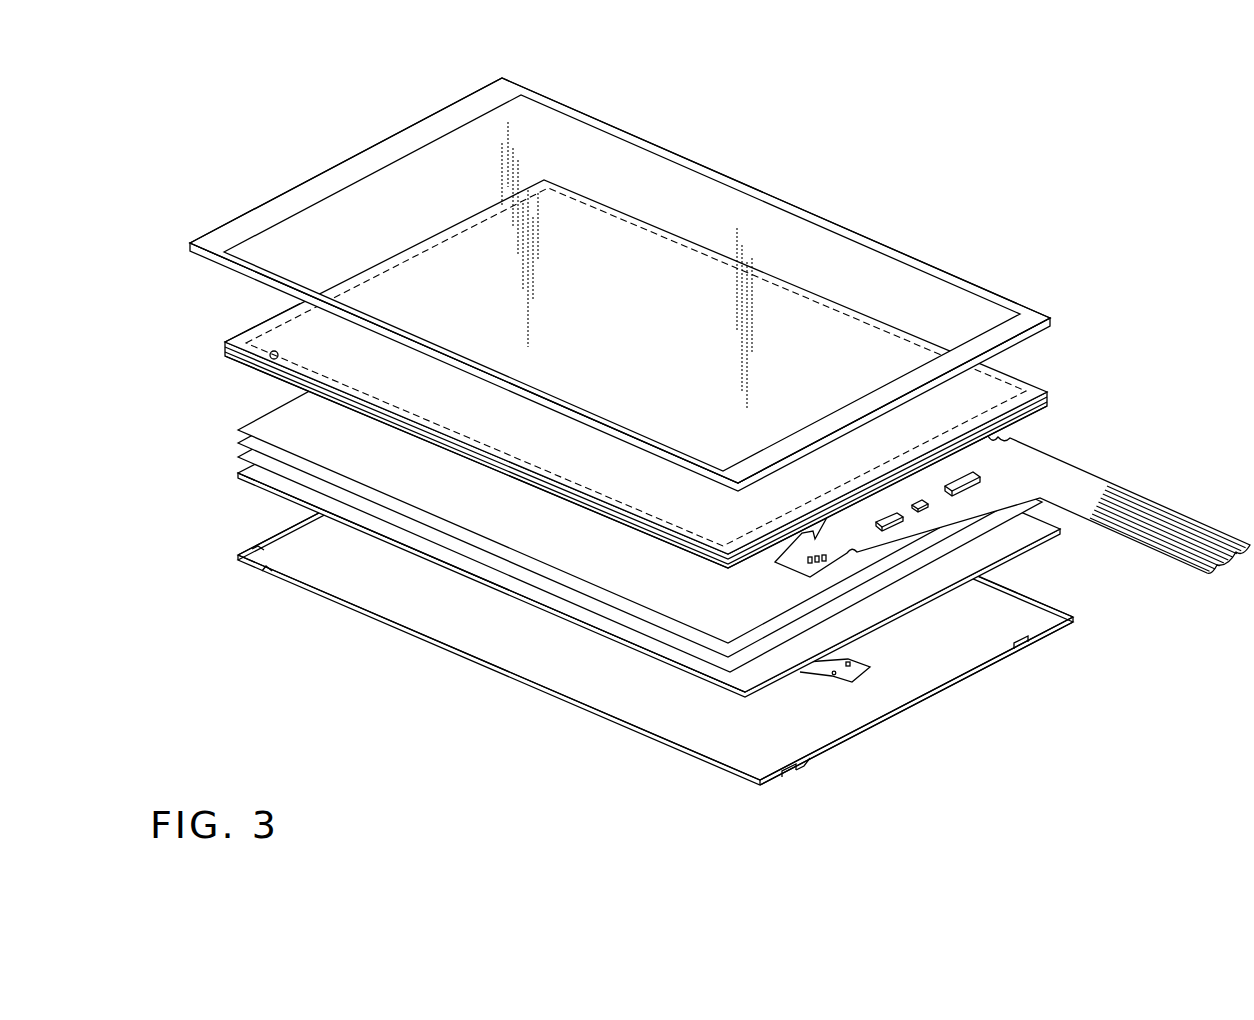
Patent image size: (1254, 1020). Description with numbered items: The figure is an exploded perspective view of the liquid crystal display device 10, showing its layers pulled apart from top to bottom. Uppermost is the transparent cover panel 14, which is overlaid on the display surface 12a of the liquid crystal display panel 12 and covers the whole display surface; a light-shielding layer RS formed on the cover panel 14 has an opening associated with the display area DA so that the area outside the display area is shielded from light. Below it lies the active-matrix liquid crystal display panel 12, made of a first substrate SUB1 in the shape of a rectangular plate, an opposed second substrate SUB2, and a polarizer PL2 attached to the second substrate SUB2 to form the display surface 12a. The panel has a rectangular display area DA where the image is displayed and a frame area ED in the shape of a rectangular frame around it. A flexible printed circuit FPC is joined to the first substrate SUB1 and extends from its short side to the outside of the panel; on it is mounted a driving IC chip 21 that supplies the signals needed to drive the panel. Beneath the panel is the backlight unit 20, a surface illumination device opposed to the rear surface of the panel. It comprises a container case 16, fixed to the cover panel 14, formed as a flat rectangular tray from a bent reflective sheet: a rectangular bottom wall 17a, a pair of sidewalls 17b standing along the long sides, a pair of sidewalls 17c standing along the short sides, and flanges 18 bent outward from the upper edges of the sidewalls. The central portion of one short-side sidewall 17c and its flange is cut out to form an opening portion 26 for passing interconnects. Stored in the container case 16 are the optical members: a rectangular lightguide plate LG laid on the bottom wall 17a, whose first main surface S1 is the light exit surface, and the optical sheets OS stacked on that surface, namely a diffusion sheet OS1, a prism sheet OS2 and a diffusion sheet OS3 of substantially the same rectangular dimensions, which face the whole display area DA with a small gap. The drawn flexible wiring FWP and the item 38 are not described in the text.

The liquid crystal display device 10 is at (941, 184).
The liquid crystal display panel 12 is at (1034, 375).
The display surface 12a is at (313, 340).
The cover panel 14 is at (555, 120).
The container case 16 is at (603, 698).
The bottom wall 17a is at (707, 730).
The sidewall on long side 17b is at (637, 735).
The sidewall on short side 17c is at (283, 538).
The flange 18 is at (263, 533).
The backlight unit 20 is at (510, 616).
The driving IC chip 21 is at (970, 490).
The opening portion 26 is at (973, 677).
The protrusion 38 is at (820, 750).
The light-shielding layer RS is at (322, 183).
The frame area ED is at (248, 330).
The display area DA is at (262, 363).
The optical sheets OS is at (132, 405).
The diffusion sheet OS1 is at (238, 458).
The prism sheet OS2 is at (238, 445).
The diffusion sheet OS3 is at (237, 429).
The lightguide plate LG is at (238, 475).
The first main surface S1 is at (673, 655).
The flexible wiring board of light source FWP is at (828, 678).
The polarizer PL2 is at (1030, 385).
The first substrate SUB1 is at (1049, 410).
The second substrate SUB2 is at (1042, 396).
The flexible printed circuit FPC is at (1173, 508).